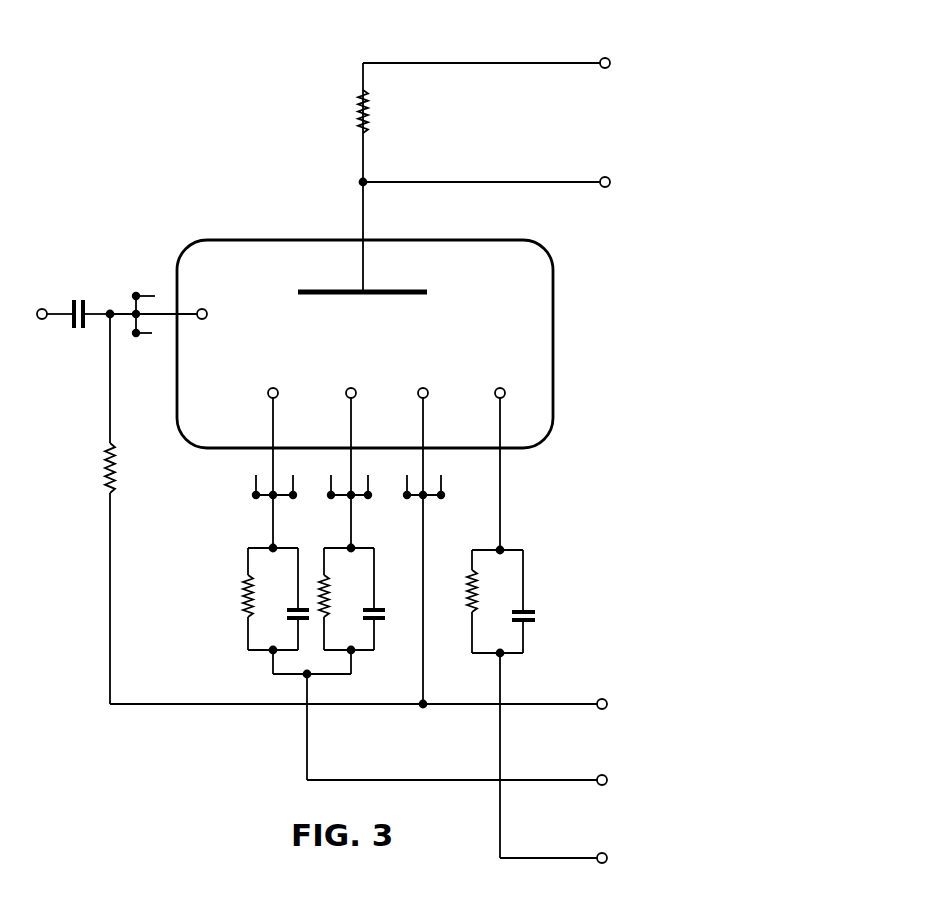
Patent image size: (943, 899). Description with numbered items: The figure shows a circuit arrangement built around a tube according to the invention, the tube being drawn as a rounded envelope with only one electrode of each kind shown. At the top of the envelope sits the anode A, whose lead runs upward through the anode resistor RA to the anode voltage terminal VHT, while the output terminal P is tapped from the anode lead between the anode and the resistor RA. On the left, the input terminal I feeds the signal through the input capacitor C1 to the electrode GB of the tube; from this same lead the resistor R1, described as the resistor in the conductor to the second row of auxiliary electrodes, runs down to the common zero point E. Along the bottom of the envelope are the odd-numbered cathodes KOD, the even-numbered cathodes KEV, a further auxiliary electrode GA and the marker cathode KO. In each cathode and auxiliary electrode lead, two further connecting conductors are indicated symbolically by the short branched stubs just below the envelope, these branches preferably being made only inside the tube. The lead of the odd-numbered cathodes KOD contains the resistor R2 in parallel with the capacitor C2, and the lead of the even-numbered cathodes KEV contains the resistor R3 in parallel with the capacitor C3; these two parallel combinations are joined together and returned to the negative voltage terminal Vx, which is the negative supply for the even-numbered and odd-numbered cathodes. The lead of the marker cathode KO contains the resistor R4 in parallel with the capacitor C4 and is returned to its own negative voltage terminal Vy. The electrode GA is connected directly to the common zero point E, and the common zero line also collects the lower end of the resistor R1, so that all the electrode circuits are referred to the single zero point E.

The anode A is at (370, 182).
The anode resistor RA is at (343, 111).
The anode voltage terminal VHT is at (503, 68).
The output terminal P is at (494, 184).
The input terminal I is at (54, 303).
The input capacitor C1 is at (90, 305).
The control grid GB is at (162, 312).
The resistor in the conductor to the second row of auxiliary electrodes R1 is at (94, 509).
The odd-numbered cathodes KOD is at (275, 458).
The even-numbered cathodes KEV is at (348, 458).
The auxiliary grid GA is at (424, 537).
The zero cathode KO is at (501, 459).
The resistor in the conductor to the odd-numbered cathodes R2 is at (253, 599).
The capacitor in the conductor to the odd-numbered cathodes C2 is at (285, 599).
The resistor in the lead to the even-numbered cathodes R3 is at (346, 599).
The capacitor in the lead to the even-numbered cathodes C3 is at (386, 599).
The resistor in the lead to the marker cathode R4 is at (479, 602).
The capacitor in the lead to the marker cathode C4 is at (532, 601).
The common zero point E is at (365, 706).
The negative voltage terminal for the even-numbered and odd-numbered cathodes Vx is at (457, 721).
The negative voltage terminal for the marker cathode Vy is at (571, 762).